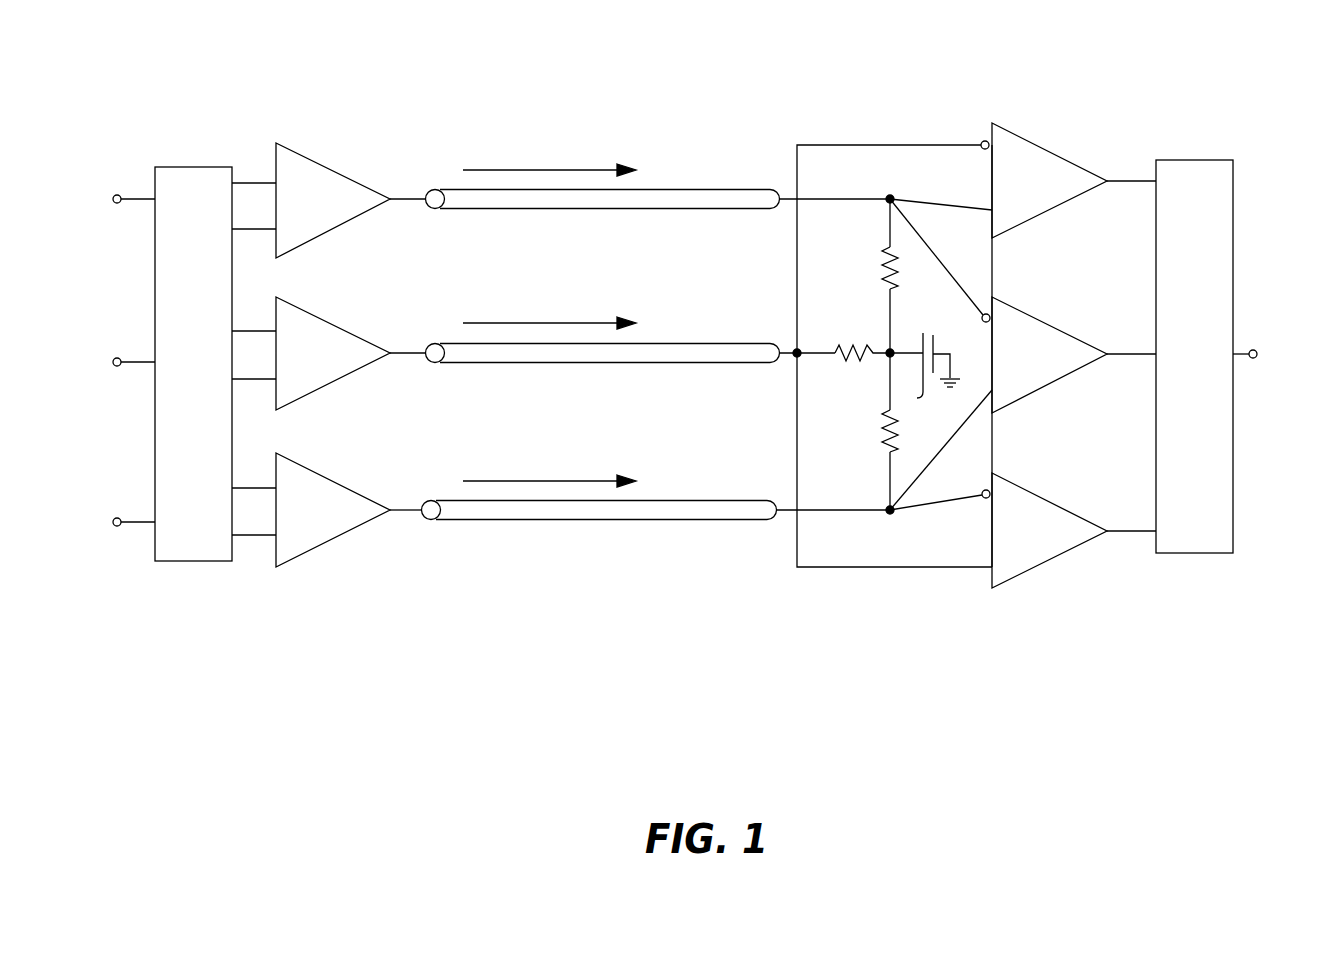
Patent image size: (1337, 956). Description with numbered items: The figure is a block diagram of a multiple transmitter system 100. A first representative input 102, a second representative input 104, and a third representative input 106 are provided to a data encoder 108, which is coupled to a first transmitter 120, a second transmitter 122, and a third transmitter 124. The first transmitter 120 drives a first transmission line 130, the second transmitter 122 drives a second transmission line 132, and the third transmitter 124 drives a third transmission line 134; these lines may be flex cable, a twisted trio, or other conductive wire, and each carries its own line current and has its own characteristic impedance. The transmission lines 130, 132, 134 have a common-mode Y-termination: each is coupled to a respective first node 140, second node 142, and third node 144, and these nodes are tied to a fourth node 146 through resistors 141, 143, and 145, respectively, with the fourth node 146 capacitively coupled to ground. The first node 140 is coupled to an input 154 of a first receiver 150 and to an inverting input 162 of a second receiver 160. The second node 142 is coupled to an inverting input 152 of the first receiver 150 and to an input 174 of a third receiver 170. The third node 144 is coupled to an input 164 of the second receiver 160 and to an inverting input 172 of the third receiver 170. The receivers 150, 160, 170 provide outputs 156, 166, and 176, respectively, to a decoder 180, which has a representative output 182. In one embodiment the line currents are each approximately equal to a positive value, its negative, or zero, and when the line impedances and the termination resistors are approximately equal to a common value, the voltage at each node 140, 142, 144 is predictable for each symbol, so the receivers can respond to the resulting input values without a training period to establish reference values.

The multiple transmitter system 100 is at (201, 50).
The first representative input 102 is at (113, 203).
The second representative input 104 is at (113, 366).
The third representative input 106 is at (113, 526).
The data encoder 108 is at (190, 167).
The first transmitter 120 is at (302, 153).
The second transmitter 122 is at (302, 307).
The third transmitter 124 is at (302, 463).
The first transmission line 130 is at (645, 209).
The second transmission line 132 is at (645, 363).
The third transmission line 134 is at (648, 520).
The first node 140 is at (888, 195).
The resistor 141 is at (886, 287).
The second node 142 is at (793, 350).
The resistor 143 is at (872, 362).
The third node 144 is at (888, 505).
The resistor 145 is at (885, 448).
The fourth node 146 is at (893, 350).
The first receiver 150 is at (1014, 133).
The inverting input 152 is at (968, 143).
The input 154 is at (977, 207).
The output 156 is at (1127, 181).
The second receiver 160 is at (1031, 313).
The inverting input 162 is at (960, 289).
The input 164 is at (970, 413).
The output 166 is at (1135, 352).
The third receiver 170 is at (1013, 482).
The inverting input 172 is at (970, 503).
The input 174 is at (978, 570).
The output 176 is at (1127, 532).
The decoder 180 is at (1187, 160).
The representative output 182 is at (1257, 350).